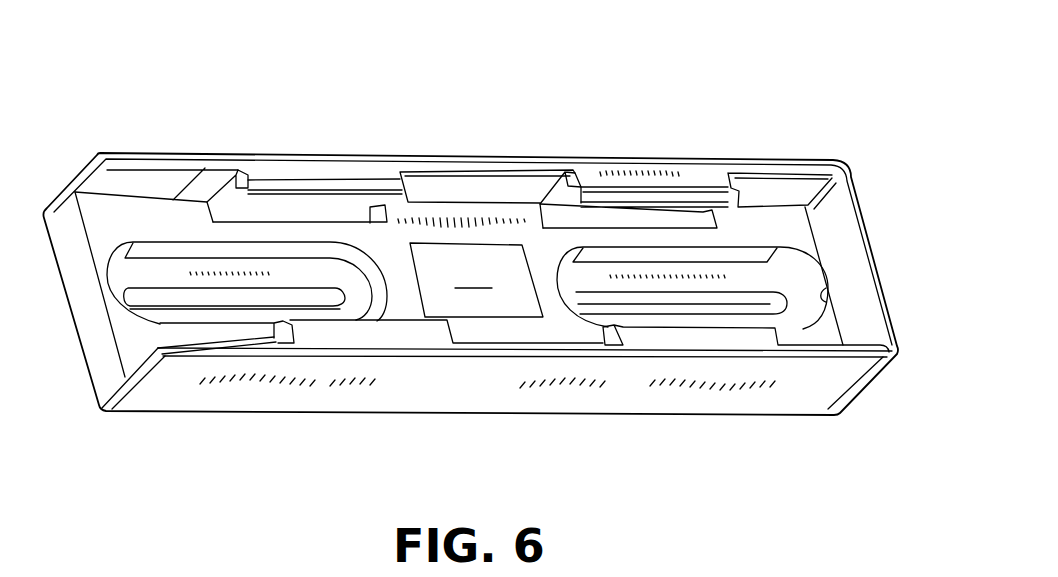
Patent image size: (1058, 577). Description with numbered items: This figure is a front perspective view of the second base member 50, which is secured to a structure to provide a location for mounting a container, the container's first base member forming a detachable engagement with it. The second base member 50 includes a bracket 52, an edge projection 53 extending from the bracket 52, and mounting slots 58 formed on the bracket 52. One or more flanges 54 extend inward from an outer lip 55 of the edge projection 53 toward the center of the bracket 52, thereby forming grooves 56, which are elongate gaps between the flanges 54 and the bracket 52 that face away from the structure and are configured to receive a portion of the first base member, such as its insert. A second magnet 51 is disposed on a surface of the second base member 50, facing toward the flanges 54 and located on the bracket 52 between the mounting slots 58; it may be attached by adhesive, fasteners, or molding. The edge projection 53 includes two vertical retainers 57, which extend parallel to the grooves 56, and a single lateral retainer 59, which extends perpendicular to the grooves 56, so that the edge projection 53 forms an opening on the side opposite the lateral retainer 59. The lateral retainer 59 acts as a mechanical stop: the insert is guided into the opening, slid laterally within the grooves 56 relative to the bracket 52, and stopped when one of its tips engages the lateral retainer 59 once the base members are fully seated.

The second base member 50 is at (813, 120).
The second magnet 51 is at (476, 280).
The bracket 52 is at (773, 232).
The edge projection 53 is at (848, 162).
The flanges 54 is at (331, 170).
The outer lip 55 is at (478, 165).
The grooves 56 is at (233, 212).
The vertical retainers 57 is at (128, 180).
The mounting slots 58 is at (163, 303).
The lateral retainer 59 is at (840, 275).